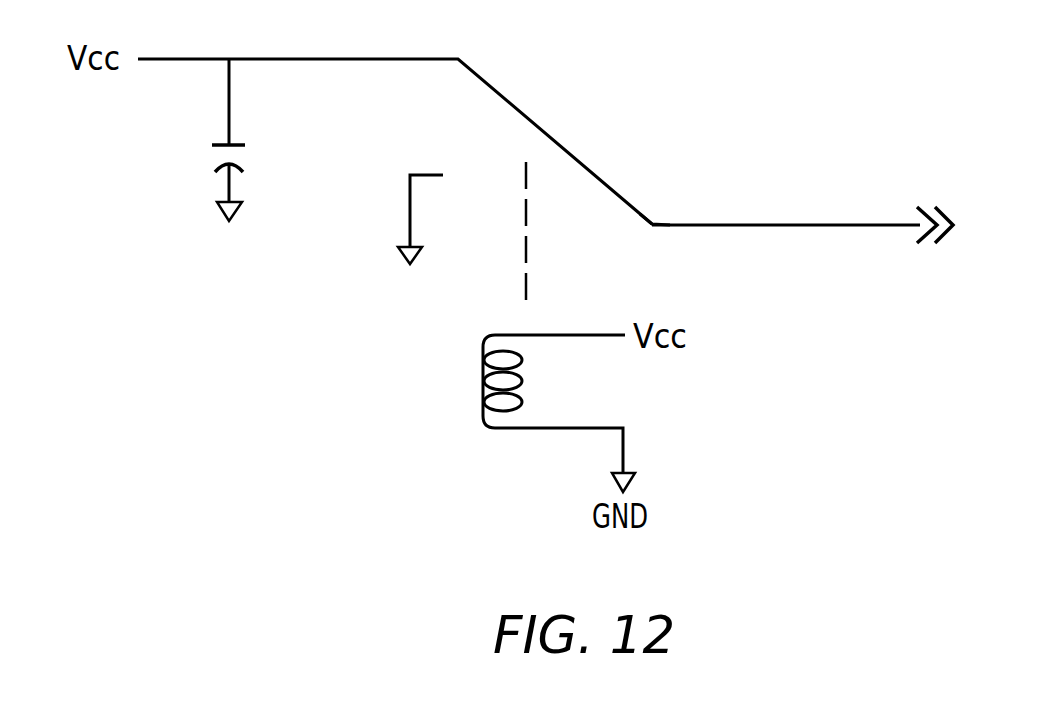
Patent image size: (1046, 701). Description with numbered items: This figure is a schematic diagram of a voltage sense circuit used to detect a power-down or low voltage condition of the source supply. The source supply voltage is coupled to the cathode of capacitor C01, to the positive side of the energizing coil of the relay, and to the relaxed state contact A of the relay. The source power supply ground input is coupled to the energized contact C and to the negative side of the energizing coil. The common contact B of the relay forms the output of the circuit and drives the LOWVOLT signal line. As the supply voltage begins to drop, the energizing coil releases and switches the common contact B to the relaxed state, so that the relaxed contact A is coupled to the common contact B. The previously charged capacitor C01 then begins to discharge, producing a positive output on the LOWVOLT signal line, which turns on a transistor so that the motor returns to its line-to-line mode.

The capacitor C01 is at (252, 162).
The relaxed state contact A is at (395, 122).
The common contact B is at (655, 242).
The energized contact C is at (422, 233).
The LOWVOLT signal line LOWVOLT is at (802, 213).